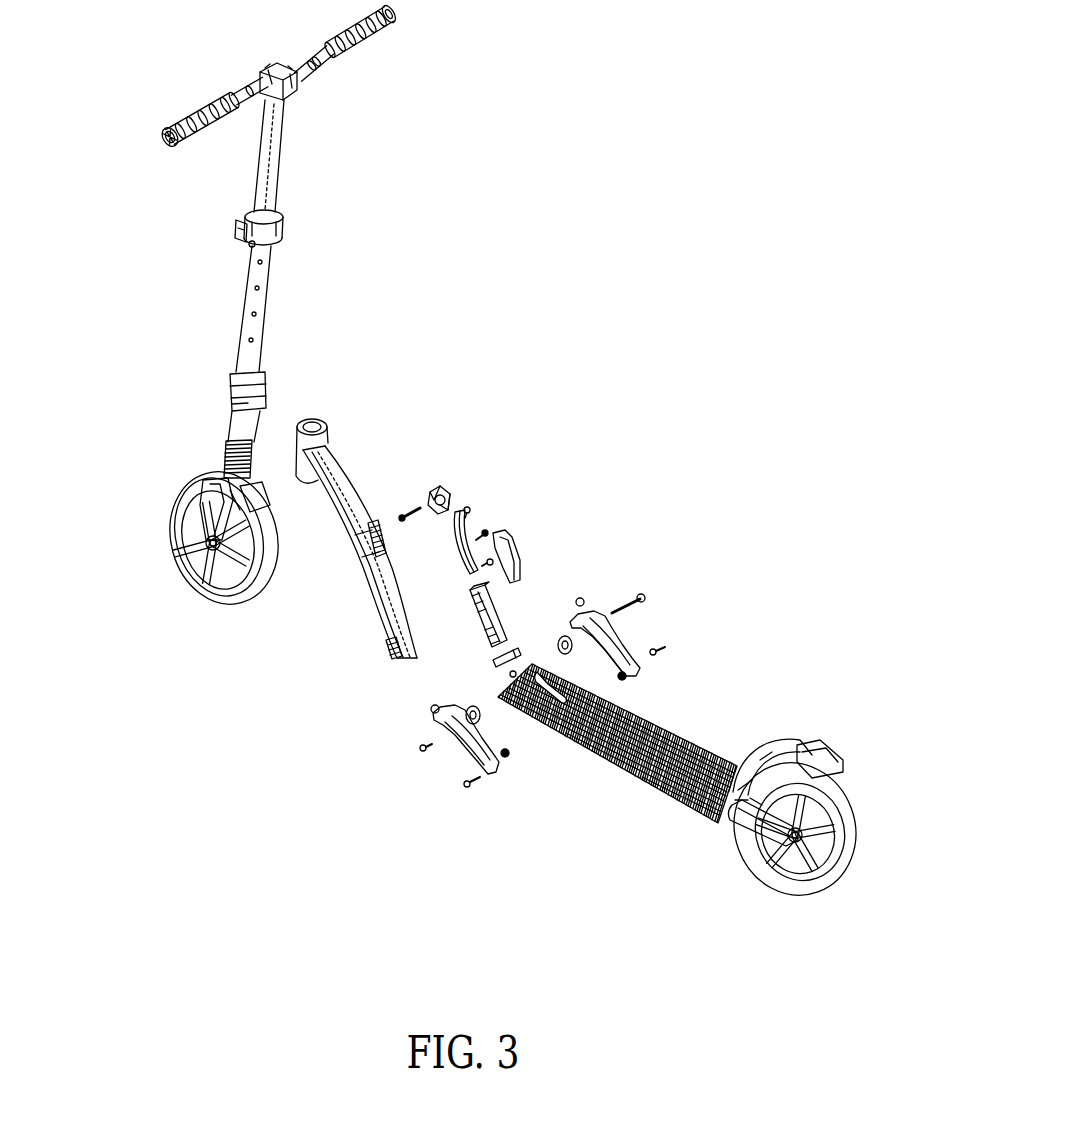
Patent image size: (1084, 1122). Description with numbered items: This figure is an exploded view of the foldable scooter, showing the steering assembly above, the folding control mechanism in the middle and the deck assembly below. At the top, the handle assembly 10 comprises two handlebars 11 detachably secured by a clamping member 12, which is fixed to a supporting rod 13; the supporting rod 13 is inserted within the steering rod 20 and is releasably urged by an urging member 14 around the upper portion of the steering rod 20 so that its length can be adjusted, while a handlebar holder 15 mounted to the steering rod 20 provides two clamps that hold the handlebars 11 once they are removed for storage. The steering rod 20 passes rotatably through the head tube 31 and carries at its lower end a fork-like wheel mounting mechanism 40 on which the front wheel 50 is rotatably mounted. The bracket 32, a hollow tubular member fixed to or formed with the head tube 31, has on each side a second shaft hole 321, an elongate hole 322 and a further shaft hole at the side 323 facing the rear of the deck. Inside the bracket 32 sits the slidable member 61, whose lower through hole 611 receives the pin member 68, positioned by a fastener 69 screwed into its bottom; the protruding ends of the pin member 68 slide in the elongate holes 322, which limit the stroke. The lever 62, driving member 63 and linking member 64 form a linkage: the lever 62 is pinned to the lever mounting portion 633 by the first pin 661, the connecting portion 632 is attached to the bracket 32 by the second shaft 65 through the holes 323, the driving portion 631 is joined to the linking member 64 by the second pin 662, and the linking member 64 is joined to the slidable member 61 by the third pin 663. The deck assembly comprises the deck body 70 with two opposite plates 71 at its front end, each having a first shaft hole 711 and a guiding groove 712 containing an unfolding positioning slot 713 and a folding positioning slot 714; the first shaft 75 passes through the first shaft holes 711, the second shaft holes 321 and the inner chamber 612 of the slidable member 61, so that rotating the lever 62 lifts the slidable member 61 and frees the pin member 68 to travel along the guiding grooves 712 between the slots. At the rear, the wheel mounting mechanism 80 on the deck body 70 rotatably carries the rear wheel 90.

The handle assembly 10 is at (97, 213).
The handlebar 11 is at (345, 28).
The clamping member 12 is at (253, 83).
The supporting rod 13 is at (260, 193).
The urging member 14 is at (240, 222).
The handlebar holder 15 is at (240, 237).
The steering rod 20 is at (257, 280).
The head tube 31 is at (308, 417).
The bracket 32 is at (358, 542).
The second shaft hole 321 is at (367, 570).
The elongate hole 322 is at (387, 620).
The second shaft hole 323 is at (228, 602).
The wheel mounting mechanism 40 is at (187, 497).
The front wheel 50 is at (177, 543).
The slidable member 61 is at (507, 610).
The through hole 611 is at (482, 642).
The inner chamber 612 is at (475, 617).
The lever 62 is at (503, 547).
The driving member 63 is at (527, 382).
The driving portion 631 is at (439, 498).
The connecting portion 632 is at (427, 497).
The lever mounting portion 633 is at (445, 503).
The linking member 64 is at (463, 548).
The second shaft 65 is at (402, 513).
The first pin 661 is at (485, 533).
The second pin 662 is at (467, 507).
The third pin 663 is at (485, 562).
The pin member 68 is at (513, 672).
The fastener 69 is at (433, 708).
The deck body 70 is at (673, 727).
The plate 71 is at (460, 725).
The first shaft hole 711 is at (440, 728).
The guiding groove 712 is at (450, 758).
The unfolding positioning slot 713 is at (466, 786).
The folding positioning slot 714 is at (442, 712).
The first shaft 75 is at (640, 598).
The wheel mounting mechanism 80 is at (758, 837).
The rear wheel 90 is at (845, 818).